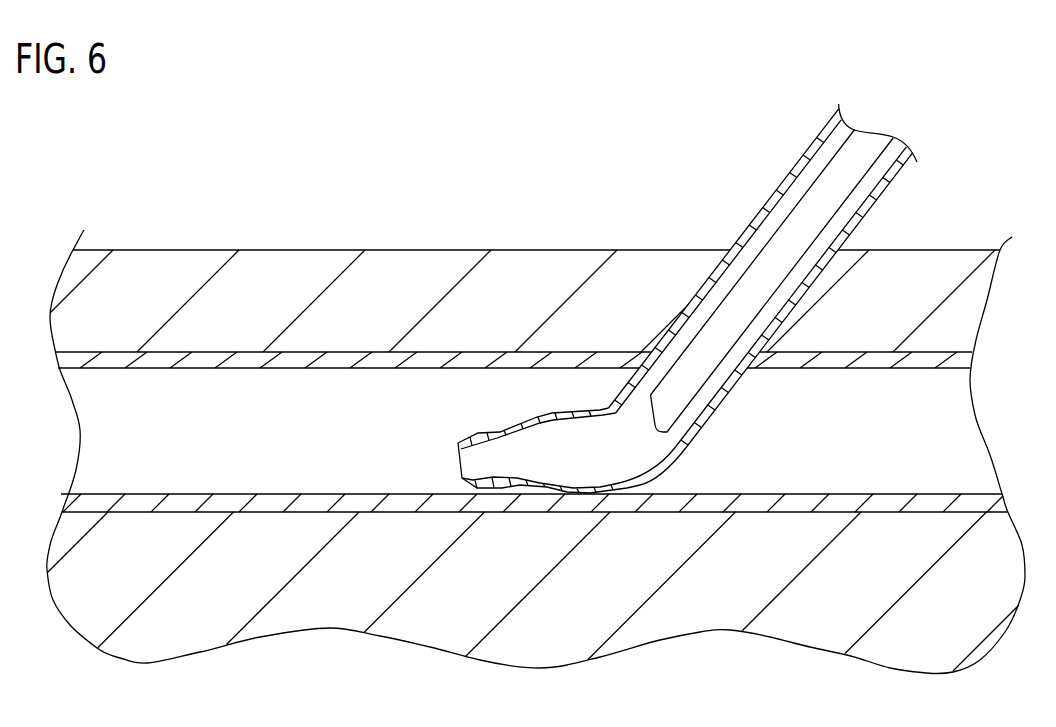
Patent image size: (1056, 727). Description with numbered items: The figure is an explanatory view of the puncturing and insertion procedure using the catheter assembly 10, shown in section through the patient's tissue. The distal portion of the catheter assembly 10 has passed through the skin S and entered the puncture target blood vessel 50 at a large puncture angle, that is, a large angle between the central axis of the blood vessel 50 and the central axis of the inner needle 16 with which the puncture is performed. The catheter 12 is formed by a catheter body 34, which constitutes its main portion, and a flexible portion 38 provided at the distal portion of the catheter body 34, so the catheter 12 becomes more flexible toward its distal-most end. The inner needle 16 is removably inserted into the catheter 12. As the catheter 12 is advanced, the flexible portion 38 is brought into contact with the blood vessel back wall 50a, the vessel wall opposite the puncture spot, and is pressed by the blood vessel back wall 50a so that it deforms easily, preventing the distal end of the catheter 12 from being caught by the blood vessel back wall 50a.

The skin S is at (322, 237).
The blood vessel 50 is at (213, 340).
The blood vessel back wall 50a is at (573, 502).
The catheter assembly 10 is at (676, 298).
The catheter 12 is at (676, 298).
The catheter body 34 is at (758, 200).
The inner needle 16 is at (697, 375).
The flexible portion 38 is at (494, 424).